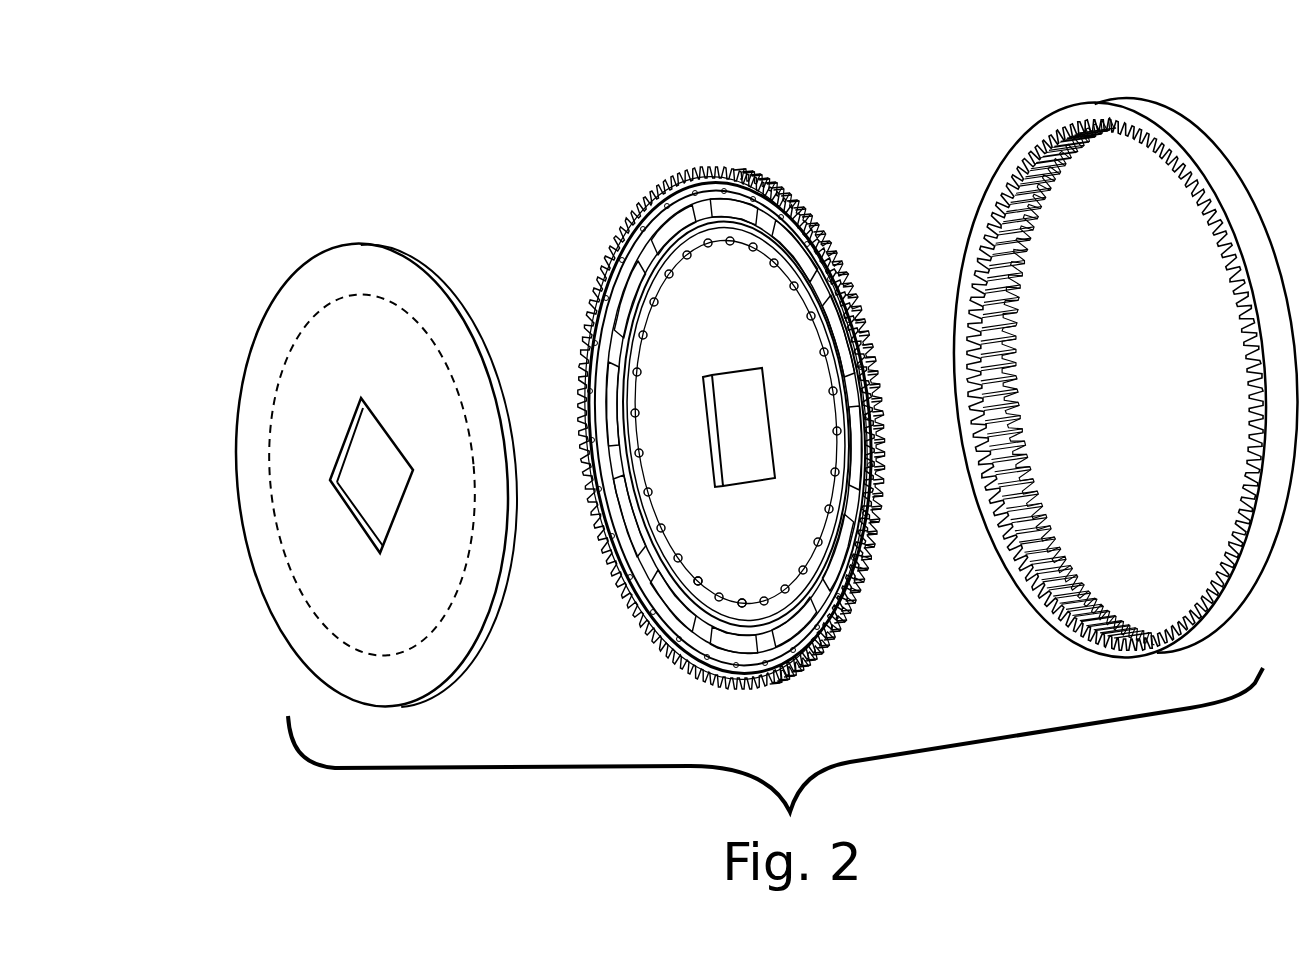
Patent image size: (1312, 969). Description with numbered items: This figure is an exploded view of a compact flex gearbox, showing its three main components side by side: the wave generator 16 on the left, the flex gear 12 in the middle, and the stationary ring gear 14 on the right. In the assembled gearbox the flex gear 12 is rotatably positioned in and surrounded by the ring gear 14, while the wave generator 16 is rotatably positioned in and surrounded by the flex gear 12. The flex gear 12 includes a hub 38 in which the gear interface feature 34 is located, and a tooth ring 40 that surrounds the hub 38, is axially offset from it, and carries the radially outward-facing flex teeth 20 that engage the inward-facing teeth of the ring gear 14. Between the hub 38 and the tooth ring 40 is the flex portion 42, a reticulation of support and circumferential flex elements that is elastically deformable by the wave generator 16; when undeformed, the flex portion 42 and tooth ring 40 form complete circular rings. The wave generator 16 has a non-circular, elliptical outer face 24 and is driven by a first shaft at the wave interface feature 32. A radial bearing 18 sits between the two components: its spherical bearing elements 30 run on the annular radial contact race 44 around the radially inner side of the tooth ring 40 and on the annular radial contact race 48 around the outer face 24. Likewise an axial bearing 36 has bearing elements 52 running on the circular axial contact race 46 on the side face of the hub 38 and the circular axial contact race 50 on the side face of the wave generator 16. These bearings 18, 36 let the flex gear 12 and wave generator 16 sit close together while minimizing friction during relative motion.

The flex gear 12 is at (810, 198).
The ring gear 14 is at (1235, 150).
The wave generator 16 is at (428, 256).
The radial bearing 18 is at (637, 237).
The flex teeth 20 is at (877, 375).
The outer face 24 is at (1000, 185).
The bearing elements 30 is at (604, 272).
The wave interface feature 32 is at (352, 510).
The gear interface feature 34 is at (716, 443).
The axial bearing 36 is at (817, 538).
The hub 38 is at (658, 612).
The tooth ring 40 is at (864, 310).
The flex portion 42 is at (700, 193).
The radial contact race 44 is at (585, 368).
The axial contact race 46 is at (783, 285).
The radial contact race 48 is at (472, 346).
The axial contact race 50 is at (463, 442).
The bearing elements 52 is at (740, 597).